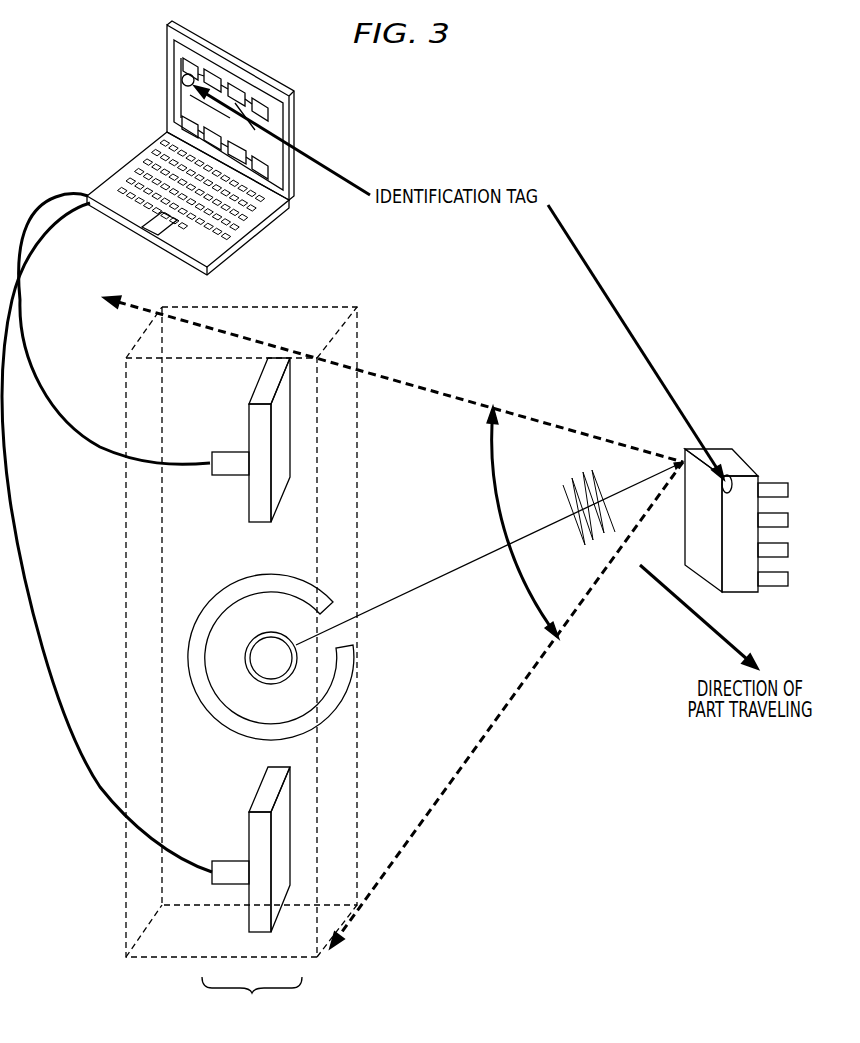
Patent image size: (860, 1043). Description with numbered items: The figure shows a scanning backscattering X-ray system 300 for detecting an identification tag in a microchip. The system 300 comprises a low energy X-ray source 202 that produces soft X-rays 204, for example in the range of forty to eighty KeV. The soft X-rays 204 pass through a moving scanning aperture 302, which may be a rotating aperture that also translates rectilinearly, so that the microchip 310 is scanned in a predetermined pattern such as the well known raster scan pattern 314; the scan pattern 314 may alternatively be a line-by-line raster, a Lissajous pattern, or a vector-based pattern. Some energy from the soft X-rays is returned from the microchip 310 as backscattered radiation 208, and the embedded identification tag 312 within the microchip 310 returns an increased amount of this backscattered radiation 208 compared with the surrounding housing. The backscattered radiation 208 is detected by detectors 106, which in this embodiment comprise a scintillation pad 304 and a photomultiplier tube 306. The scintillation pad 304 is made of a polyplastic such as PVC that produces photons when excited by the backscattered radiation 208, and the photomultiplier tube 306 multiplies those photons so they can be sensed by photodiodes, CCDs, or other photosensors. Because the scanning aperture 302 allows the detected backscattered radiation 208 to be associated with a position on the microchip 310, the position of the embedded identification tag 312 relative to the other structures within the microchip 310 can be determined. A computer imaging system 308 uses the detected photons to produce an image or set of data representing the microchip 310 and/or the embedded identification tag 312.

The scanning backscattering X-ray system 300 is at (641, 173).
The computer imaging system 308 is at (293, 128).
The detectors 106 is at (252, 999).
The scintillation pad 304 is at (290, 454).
The photomultiplier tube 306 is at (230, 452).
The moving scanning aperture 302 is at (352, 635).
The low energy X-ray source 202 is at (296, 668).
The soft X-rays 204 is at (440, 570).
The backscattered radiation 208 is at (523, 522).
The raster scan pattern 314 is at (580, 485).
The microchip 310 is at (735, 592).
The embedded identification tag 312 is at (733, 484).